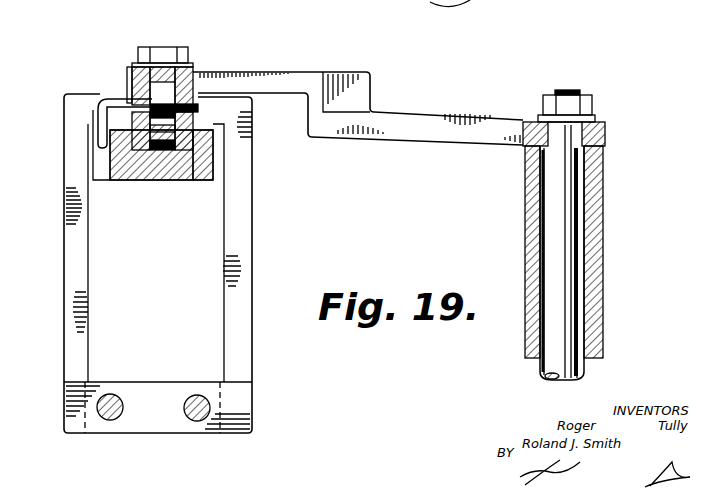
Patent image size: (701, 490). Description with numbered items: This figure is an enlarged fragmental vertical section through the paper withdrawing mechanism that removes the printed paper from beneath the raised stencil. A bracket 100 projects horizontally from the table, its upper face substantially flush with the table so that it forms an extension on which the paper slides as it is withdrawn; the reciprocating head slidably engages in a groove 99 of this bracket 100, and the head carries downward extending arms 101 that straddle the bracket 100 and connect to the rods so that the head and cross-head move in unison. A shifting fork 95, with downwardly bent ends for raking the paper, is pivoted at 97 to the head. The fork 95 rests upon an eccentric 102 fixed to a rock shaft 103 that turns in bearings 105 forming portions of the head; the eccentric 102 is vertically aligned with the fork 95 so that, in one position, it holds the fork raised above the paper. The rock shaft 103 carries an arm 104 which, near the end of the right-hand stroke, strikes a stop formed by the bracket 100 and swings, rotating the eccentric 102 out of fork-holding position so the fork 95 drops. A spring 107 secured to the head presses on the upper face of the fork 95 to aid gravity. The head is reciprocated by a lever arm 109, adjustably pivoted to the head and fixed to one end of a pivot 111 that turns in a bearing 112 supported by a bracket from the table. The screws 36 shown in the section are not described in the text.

The mounting screws 36 is at (115, 418).
The shifting fork 95 is at (185, 62).
The pivot 97 is at (186, 150).
The groove 99 is at (208, 142).
The bracket 100 is at (135, 170).
The downward extending arms 101 is at (90, 268).
The eccentric 102 is at (163, 100).
The rock shaft 103 is at (200, 108).
The arm 104 is at (95, 124).
The bearings 105 is at (247, 72).
The spring 107 is at (165, 62).
The lever arm 109 is at (420, 123).
The pivot 111 is at (604, 190).
The bearing 112 is at (604, 238).